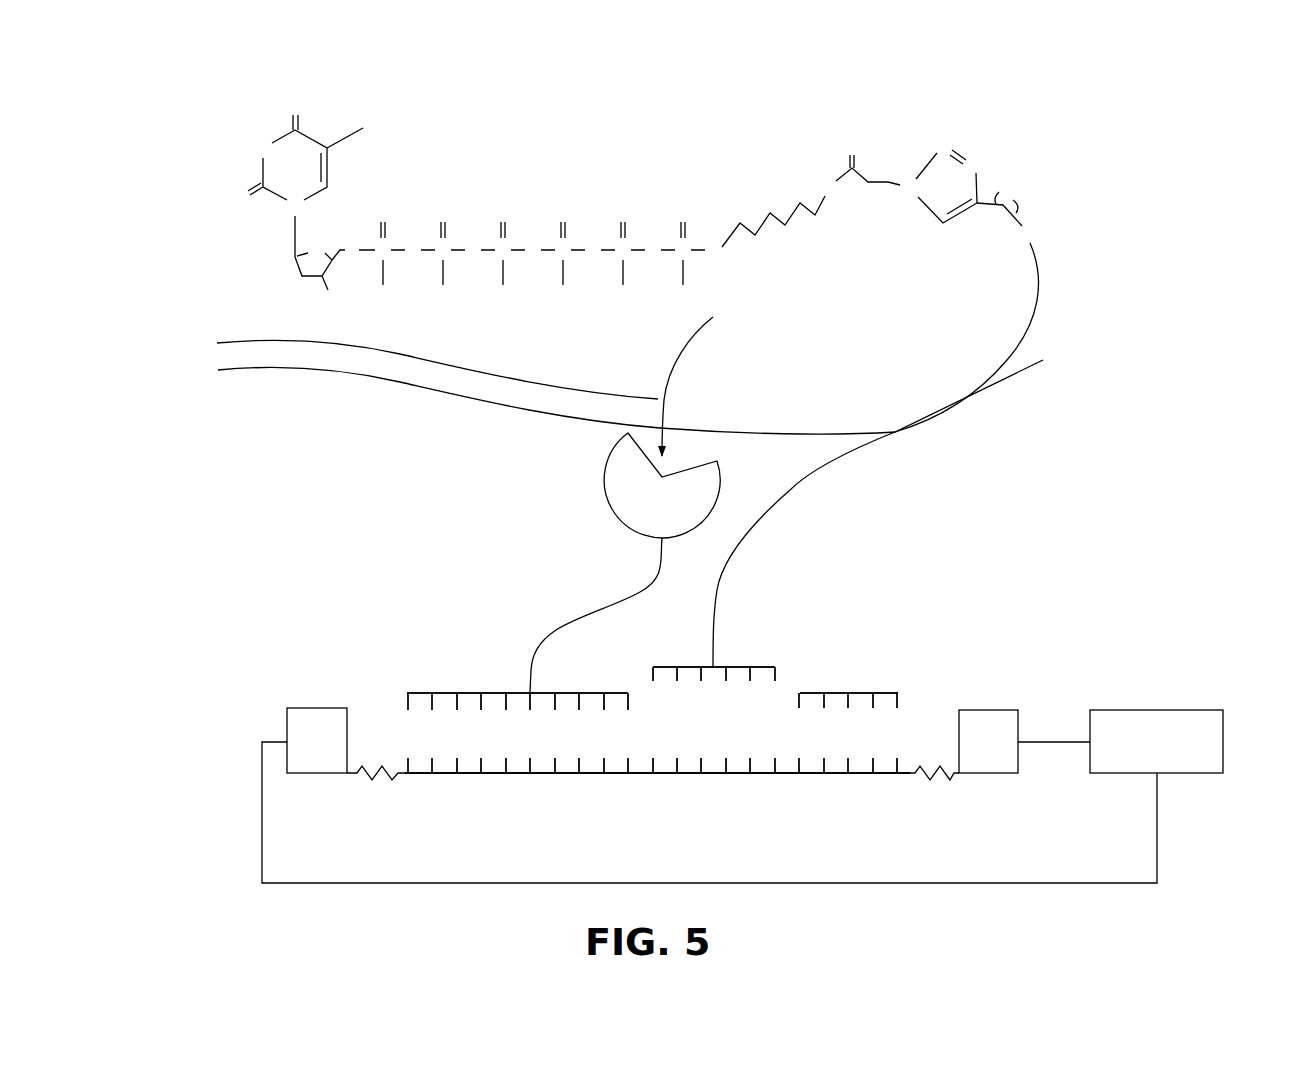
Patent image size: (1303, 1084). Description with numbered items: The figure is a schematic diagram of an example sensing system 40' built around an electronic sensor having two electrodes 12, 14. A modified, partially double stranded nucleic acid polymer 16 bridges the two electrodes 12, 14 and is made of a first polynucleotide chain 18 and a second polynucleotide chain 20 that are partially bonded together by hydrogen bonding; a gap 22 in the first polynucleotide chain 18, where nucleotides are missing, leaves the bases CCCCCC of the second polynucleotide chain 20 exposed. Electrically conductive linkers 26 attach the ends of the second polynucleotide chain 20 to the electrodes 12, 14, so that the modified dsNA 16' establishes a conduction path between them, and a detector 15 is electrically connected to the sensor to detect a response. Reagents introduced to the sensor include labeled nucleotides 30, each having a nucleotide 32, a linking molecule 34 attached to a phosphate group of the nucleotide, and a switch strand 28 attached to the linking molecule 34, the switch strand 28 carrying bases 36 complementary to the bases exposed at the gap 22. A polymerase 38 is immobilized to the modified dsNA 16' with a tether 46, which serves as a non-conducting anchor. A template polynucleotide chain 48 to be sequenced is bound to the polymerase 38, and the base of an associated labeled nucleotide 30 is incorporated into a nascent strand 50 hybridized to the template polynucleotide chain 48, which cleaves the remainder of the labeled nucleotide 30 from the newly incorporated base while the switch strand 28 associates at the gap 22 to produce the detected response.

The labeled nucleotide 30 is at (250, 126).
The nucleotide 32 is at (969, 130).
The sensing system 40' is at (1065, 211).
The linking molecule 34 is at (800, 480).
The template polynucleotide chain 48 is at (358, 380).
The nascent strand 50 is at (275, 342).
The polymerase 38 is at (630, 483).
The tether 46 is at (593, 612).
The modified, partially double stranded nucleic acid polymer 16 is at (621, 703).
The modified dsNA 16' is at (655, 733).
The bases 36 is at (641, 681).
The switch strand 28 is at (745, 652).
The first polynucleotide chain 18 is at (857, 692).
The gap 22 is at (793, 686).
The second polynucleotide chain 20 is at (857, 777).
The electrode 12 is at (318, 755).
The electrode 14 is at (990, 757).
The detector 15 is at (1157, 708).
The linker 26 is at (385, 780).